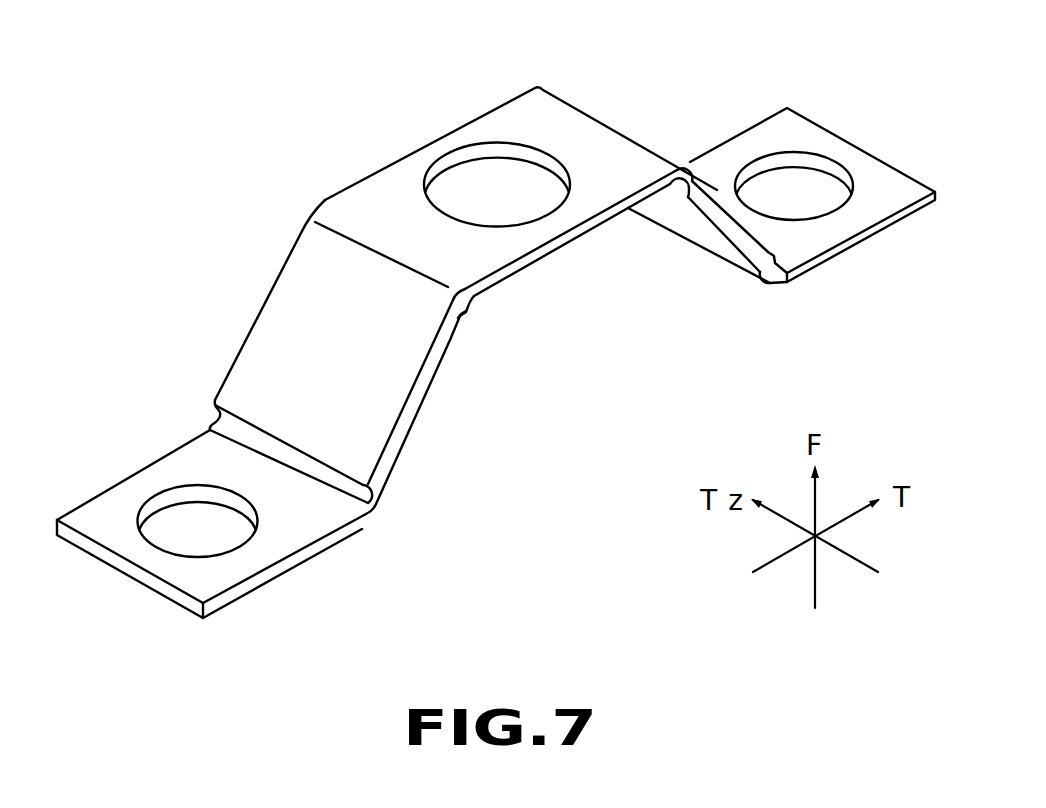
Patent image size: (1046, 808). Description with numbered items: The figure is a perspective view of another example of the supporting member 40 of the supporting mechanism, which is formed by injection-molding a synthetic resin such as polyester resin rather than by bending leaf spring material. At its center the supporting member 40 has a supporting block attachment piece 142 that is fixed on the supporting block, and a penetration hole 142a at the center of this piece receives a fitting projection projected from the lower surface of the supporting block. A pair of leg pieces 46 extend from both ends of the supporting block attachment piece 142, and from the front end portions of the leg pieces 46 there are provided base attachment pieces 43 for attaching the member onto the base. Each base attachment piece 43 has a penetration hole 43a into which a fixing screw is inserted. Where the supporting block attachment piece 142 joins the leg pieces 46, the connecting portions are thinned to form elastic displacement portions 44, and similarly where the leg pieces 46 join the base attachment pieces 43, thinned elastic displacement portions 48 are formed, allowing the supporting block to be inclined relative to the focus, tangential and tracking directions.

The supporting member 40 is at (498, 349).
The base attachment piece 43 is at (293, 533).
The penetration hole 43a is at (170, 498).
The elastic displacement portion 44 is at (466, 296).
The leg piece 46 is at (286, 349).
The elastic displacement portion 48 is at (355, 500).
The supporting block attachment piece 142 is at (590, 224).
The penetration hole 142a is at (465, 157).